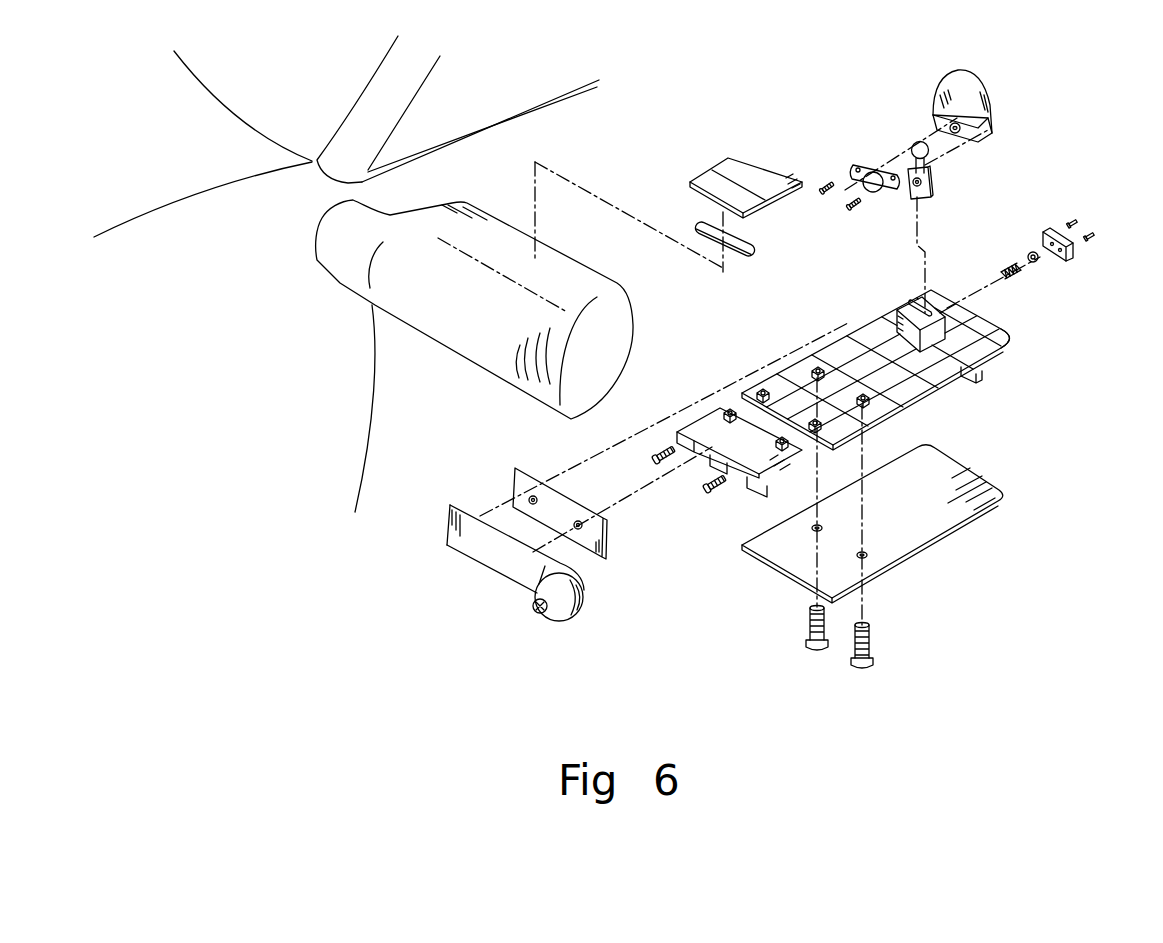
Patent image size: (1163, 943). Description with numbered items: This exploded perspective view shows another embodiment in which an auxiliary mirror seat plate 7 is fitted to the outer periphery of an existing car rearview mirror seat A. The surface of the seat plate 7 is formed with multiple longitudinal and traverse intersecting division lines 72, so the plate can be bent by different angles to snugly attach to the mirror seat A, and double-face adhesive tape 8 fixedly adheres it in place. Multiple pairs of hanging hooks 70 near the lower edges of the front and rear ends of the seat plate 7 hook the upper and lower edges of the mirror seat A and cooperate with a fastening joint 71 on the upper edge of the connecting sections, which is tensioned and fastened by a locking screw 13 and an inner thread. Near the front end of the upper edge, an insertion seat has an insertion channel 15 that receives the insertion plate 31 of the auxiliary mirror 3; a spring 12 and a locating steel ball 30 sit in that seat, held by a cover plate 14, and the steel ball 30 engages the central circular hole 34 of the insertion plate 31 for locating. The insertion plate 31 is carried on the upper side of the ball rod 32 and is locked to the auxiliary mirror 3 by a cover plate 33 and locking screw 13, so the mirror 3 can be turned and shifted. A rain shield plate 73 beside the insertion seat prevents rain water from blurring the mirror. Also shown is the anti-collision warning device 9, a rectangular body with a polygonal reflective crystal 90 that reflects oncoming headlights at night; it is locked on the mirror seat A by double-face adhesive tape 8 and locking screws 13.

The rearview mirror seat A is at (447, 322).
The auxiliary mirror 3 is at (957, 87).
The auxiliary mirror seat plate 7 is at (948, 290).
The double-face adhesive tape 8 is at (707, 223).
The anti-collision warning device 9 is at (478, 568).
The spring 12 is at (1014, 274).
The locking screw 13 is at (824, 190).
The cover plate 14 is at (1072, 257).
The insertion channel 15 is at (980, 348).
The locating steel ball 30 is at (1037, 260).
The insertion plate 31 is at (931, 183).
The ball rod 32 is at (914, 141).
The cover plate 33 is at (865, 167).
The central circular hole 34 is at (913, 187).
The hanging hook 70 is at (677, 438).
The fastening joint 71 is at (765, 390).
The division lines 72 is at (923, 353).
The rain shield plate 73 is at (728, 172).
The polygonal reflective crystal 90 is at (538, 608).